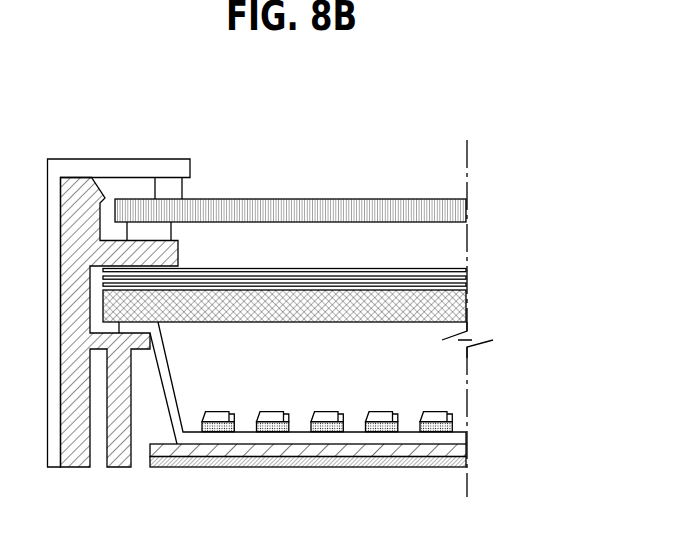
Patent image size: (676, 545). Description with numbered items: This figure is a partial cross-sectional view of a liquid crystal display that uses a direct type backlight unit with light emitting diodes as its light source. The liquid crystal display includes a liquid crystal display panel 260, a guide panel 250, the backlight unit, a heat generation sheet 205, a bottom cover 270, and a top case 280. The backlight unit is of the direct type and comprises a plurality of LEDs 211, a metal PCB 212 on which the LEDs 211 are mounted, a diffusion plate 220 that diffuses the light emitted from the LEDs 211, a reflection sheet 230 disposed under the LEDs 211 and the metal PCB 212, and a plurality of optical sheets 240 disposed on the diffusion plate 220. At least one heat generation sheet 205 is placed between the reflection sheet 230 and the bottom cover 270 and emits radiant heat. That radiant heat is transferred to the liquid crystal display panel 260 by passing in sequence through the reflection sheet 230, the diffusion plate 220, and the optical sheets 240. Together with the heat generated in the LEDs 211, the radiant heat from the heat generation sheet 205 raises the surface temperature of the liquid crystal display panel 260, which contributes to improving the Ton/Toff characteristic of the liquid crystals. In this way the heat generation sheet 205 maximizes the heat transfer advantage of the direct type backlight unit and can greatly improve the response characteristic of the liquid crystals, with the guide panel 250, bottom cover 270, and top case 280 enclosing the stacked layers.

The heat generation sheet 205 is at (465, 450).
The LEDs 211 is at (268, 413).
The metal PCB 212 is at (282, 425).
The diffusion plate 220 is at (460, 307).
The reflection sheet 230 is at (458, 439).
The optical sheets 240 is at (466, 277).
The guide panel 250 is at (72, 185).
The liquid crystal display panel 260 is at (462, 210).
The bottom cover 270 is at (465, 462).
The top case 280 is at (148, 162).